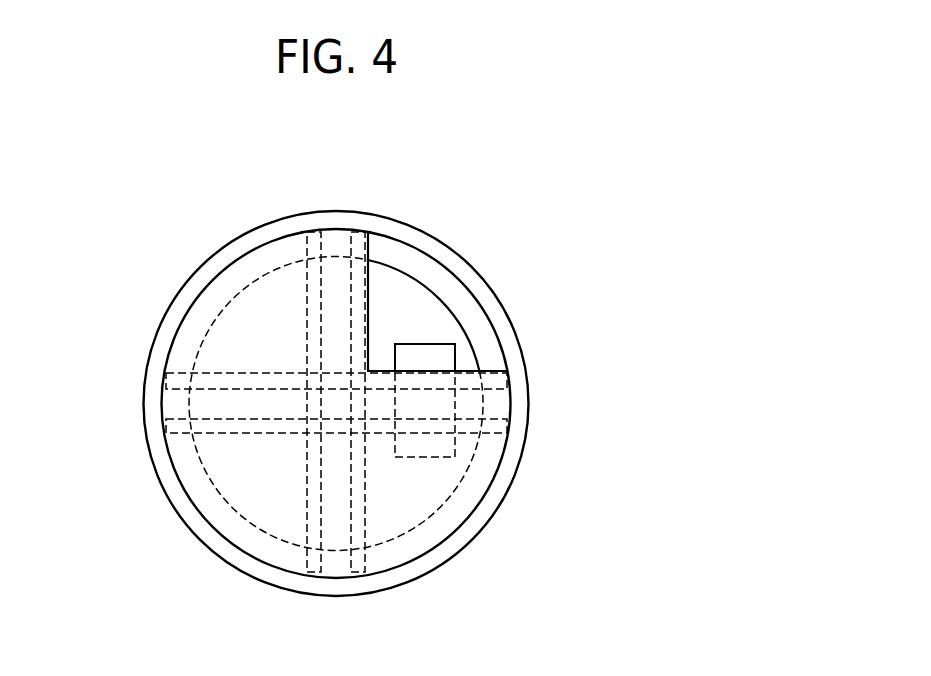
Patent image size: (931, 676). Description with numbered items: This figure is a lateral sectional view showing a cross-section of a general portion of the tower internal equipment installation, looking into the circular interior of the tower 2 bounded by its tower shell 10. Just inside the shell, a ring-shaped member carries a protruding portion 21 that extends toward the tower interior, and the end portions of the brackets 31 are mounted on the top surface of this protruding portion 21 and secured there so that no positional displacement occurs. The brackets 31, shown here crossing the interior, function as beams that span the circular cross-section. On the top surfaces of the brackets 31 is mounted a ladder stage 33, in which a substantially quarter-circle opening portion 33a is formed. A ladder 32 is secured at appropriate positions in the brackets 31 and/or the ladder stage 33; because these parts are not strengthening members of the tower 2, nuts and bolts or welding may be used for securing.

The tower 2 is at (498, 165).
The tower shell 10 is at (497, 512).
The protruding portion 21 is at (398, 250).
The bracket 31 is at (205, 373).
The ladder 32 is at (437, 344).
The ladder stage 33 is at (237, 315).
The opening portion 33a is at (412, 303).